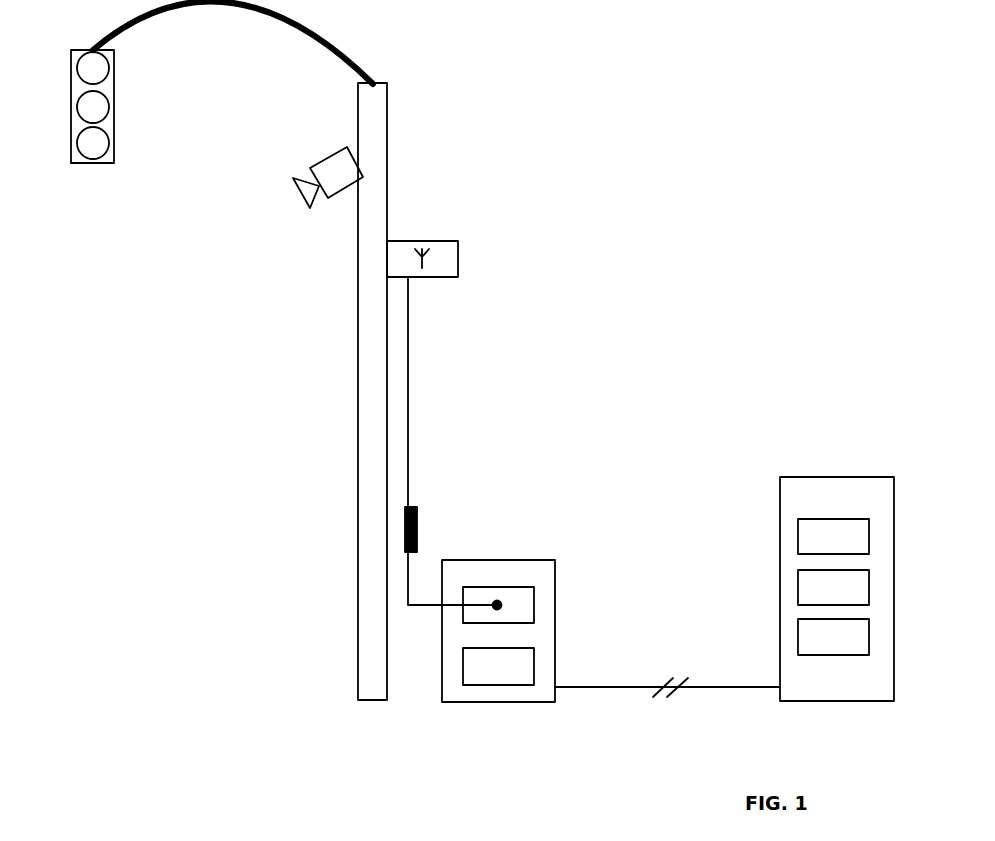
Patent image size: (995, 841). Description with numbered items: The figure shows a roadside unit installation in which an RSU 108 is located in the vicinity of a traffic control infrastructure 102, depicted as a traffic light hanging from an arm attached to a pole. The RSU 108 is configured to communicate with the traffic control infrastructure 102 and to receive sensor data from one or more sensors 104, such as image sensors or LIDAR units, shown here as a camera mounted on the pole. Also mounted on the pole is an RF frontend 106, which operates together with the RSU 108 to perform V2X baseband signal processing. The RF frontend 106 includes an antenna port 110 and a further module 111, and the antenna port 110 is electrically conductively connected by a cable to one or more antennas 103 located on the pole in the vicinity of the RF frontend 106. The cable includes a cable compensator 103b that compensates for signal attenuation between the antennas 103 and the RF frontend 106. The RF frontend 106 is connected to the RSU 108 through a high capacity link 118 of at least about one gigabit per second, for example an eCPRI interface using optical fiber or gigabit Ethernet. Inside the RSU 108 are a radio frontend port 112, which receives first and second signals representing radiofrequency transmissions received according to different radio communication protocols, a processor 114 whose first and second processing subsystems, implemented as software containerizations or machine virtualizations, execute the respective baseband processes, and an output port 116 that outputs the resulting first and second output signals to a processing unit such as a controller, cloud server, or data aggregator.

The traffic control infrastructure 102 is at (100, 234).
The antennas 103 is at (458, 260).
The cable compensator 103b is at (417, 525).
The sensors 104 is at (358, 160).
The RF frontend 106 is at (498, 646).
The RSU 108 is at (837, 604).
The antenna port 110 is at (534, 603).
The processing module 111 is at (532, 666).
The radio frontend port 112 is at (869, 536).
The processor 114 is at (869, 587).
The output port 116 is at (869, 636).
The link 118 is at (667, 697).